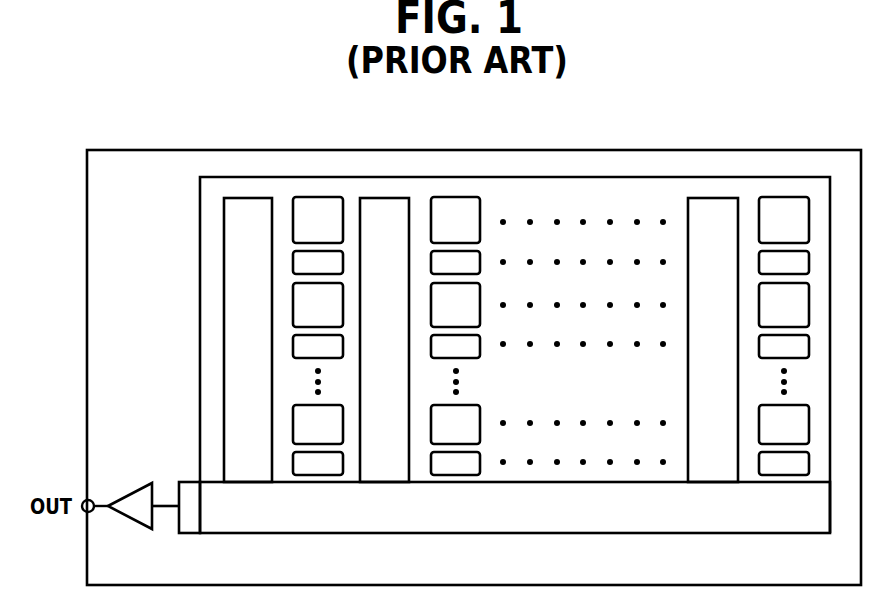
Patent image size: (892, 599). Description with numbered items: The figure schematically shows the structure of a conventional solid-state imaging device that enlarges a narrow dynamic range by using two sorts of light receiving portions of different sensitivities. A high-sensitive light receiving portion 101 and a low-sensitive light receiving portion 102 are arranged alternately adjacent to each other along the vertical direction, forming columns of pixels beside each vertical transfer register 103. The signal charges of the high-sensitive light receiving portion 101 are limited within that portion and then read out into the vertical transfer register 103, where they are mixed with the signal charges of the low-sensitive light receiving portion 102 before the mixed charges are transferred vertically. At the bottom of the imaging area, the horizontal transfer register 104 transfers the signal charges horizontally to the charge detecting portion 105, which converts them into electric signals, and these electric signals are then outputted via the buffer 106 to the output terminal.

The high-sensitive light receiving portion 101 is at (315, 197).
The low-sensitive light receiving portion 102 is at (481, 262).
The vertical transfer register 103 is at (224, 353).
The horizontal transfer register 104 is at (677, 522).
The charge detecting portion 105 is at (190, 533).
The buffer 106 is at (134, 499).